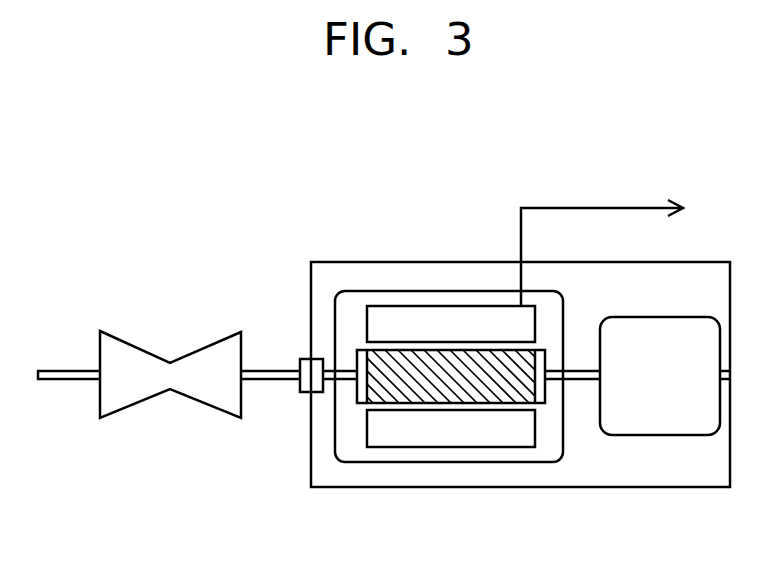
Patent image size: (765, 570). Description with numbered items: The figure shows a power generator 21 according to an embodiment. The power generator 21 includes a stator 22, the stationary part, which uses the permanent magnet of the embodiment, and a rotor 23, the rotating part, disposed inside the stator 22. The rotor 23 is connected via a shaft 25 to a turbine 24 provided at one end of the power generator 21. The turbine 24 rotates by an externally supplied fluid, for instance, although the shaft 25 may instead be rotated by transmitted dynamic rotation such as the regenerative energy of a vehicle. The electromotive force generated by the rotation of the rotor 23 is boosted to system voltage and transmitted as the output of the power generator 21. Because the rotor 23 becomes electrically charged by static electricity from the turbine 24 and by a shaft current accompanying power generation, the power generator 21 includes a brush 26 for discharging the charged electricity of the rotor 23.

The power generator 21 is at (352, 262).
The stator 22 is at (420, 437).
The rotor 23 is at (465, 395).
The turbine 24 is at (211, 343).
The shaft 25 is at (277, 382).
The brush 26 is at (651, 420).